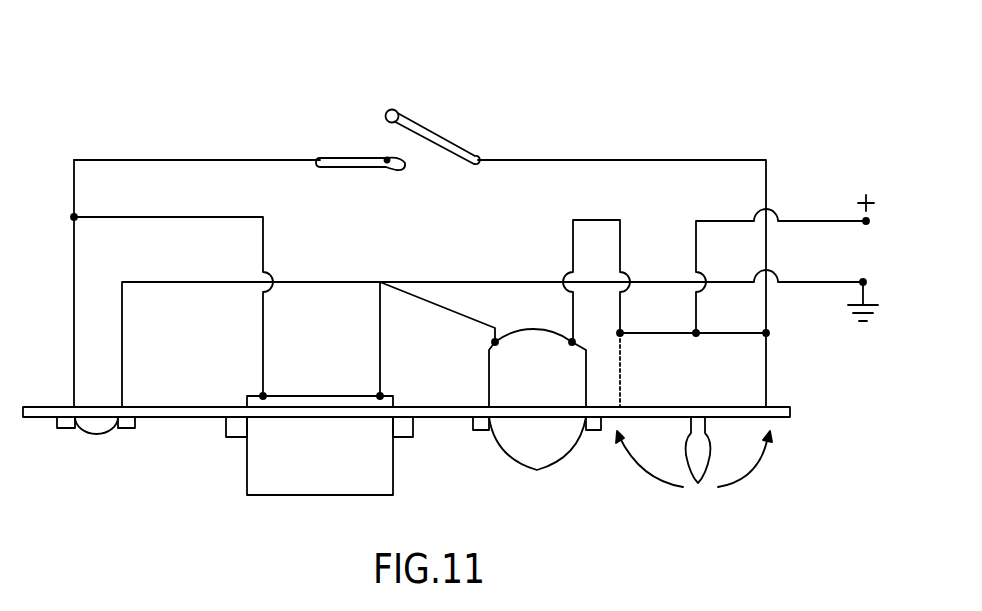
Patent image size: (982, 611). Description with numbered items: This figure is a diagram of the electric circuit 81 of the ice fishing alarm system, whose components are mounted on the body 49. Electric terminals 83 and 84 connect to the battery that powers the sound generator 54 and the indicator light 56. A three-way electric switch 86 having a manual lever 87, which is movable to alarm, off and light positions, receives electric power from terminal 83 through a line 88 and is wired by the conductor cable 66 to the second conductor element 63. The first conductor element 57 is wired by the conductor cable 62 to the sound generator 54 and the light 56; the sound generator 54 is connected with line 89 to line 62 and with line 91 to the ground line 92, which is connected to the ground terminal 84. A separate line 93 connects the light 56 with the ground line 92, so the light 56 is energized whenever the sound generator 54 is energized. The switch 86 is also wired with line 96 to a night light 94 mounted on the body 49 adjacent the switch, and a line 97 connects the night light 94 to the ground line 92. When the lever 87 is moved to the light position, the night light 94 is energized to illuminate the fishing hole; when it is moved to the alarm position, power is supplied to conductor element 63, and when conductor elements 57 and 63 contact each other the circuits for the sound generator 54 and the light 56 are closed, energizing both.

The body 49 is at (168, 420).
The sound generator 54 is at (273, 494).
The indicator light 56 is at (101, 443).
The first conductor element 57 is at (345, 160).
The electric conductor cable 62 is at (160, 160).
The second conductor element 63 is at (432, 126).
The electric conductor cable 66 is at (628, 160).
The electric circuit 81 is at (581, 122).
The electric terminal 83 is at (860, 218).
The ground terminal 84 is at (860, 285).
The three-way electric switch 86 is at (764, 372).
The manual lever 87 is at (705, 483).
The line 88 is at (697, 221).
The line 89 is at (216, 217).
The line 91 is at (380, 345).
The ground line 92 is at (340, 282).
The line 93 is at (74, 270).
The night light 94 is at (515, 445).
The line 96 is at (573, 250).
The line 97 is at (449, 310).